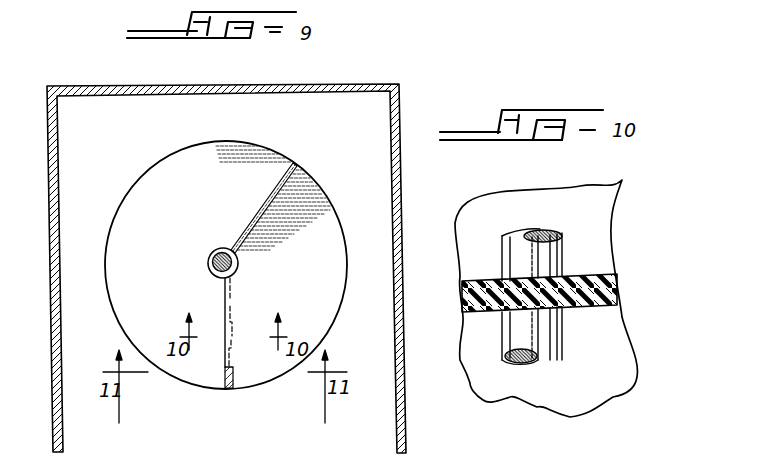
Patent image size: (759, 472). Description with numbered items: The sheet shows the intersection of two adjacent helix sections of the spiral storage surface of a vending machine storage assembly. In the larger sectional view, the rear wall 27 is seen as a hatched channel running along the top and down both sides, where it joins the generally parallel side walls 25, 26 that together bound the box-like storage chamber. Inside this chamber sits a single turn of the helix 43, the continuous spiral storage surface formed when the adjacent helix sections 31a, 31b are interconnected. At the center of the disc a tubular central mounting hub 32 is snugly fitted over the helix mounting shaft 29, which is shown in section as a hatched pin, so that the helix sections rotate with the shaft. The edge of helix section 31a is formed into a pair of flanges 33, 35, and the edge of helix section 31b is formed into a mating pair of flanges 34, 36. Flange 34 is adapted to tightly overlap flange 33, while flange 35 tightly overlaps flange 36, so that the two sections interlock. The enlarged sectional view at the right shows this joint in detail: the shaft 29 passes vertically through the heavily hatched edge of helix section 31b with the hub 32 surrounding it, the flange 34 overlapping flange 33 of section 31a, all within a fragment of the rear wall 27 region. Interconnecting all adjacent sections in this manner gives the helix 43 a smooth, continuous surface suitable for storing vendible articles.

In FIG. 9, the rear wall 27 is at (282, 84).
In FIG. 10, the rear wall 27 is at (600, 203).
In FIG. 9, the side wall 25 is at (51, 380).
In FIG. 9, the side wall 26 is at (402, 430).
In FIG. 9, the helix 43 is at (100, 187).
In FIG. 9, the helix section 31a is at (117, 258).
In FIG. 10, the helix section 31a is at (475, 311).
In FIG. 9, the helix section 31b is at (319, 243).
In FIG. 10, the helix section 31b is at (605, 283).
In FIG. 9, the central mounting hub 32 is at (222, 250).
In FIG. 10, the central mounting hub 32 is at (563, 247).
In FIG. 9, the helix mounting shaft 29 is at (237, 262).
In FIG. 10, the helix mounting shaft 29 is at (543, 231).
In FIG. 9, the flange 33 is at (227, 330).
In FIG. 10, the flange 33 is at (522, 300).
In FIG. 9, the flange 34 is at (233, 340).
In FIG. 10, the flange 34 is at (567, 260).
In FIG. 9, the flange 35 is at (227, 377).
In FIG. 9, the flange 36 is at (230, 373).